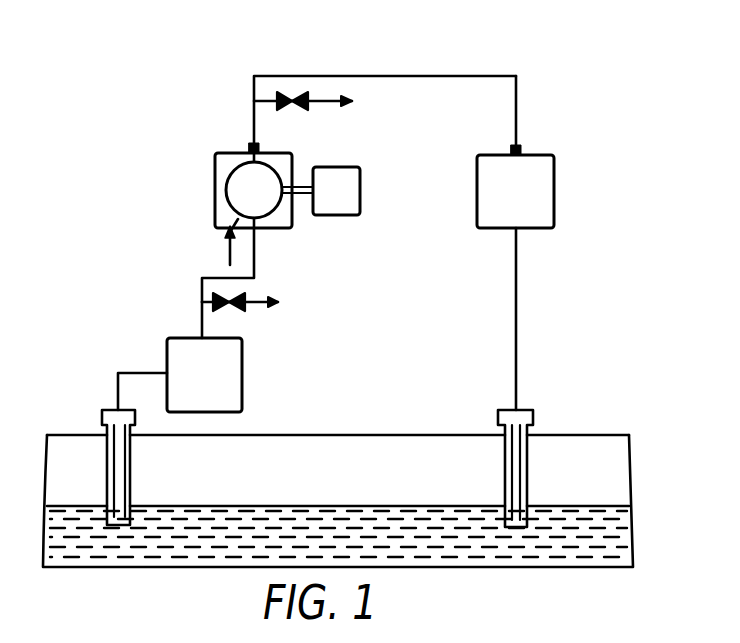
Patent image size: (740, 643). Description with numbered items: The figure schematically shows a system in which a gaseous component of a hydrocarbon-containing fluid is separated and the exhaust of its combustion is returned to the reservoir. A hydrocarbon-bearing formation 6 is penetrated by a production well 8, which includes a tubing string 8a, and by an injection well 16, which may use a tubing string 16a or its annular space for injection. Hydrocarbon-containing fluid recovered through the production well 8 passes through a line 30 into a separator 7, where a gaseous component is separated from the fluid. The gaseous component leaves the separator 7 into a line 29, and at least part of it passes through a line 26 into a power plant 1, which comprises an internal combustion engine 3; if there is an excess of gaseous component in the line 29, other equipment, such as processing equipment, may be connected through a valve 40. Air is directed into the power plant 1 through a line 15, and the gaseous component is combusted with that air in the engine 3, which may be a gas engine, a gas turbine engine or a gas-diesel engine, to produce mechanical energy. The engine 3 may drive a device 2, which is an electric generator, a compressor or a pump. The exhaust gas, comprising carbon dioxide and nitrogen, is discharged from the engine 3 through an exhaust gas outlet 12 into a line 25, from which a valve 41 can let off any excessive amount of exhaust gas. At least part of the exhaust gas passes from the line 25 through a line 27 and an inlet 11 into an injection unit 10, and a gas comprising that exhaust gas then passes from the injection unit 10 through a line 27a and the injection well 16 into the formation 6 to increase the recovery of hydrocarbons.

The power plant 1 is at (227, 163).
The device 2 is at (340, 208).
The internal combustion engine 3 is at (245, 188).
The hydrocarbon-bearing formation 6 is at (282, 525).
The separator 7 is at (230, 392).
The production well 8 is at (110, 478).
The tubing string 8a is at (122, 483).
The injection unit 10 is at (492, 193).
The inlet 11 is at (513, 148).
The exhaust gas outlet 12 is at (248, 148).
The line 15 is at (227, 247).
The injection well 16 is at (527, 467).
The tubing string 16a is at (515, 493).
The line 25 is at (253, 115).
The line 26 is at (257, 247).
The line 27 is at (517, 115).
The line 27a is at (515, 322).
The line 29 is at (202, 320).
The line 30 is at (117, 395).
The valve 40 is at (232, 307).
The valve 41 is at (294, 108).